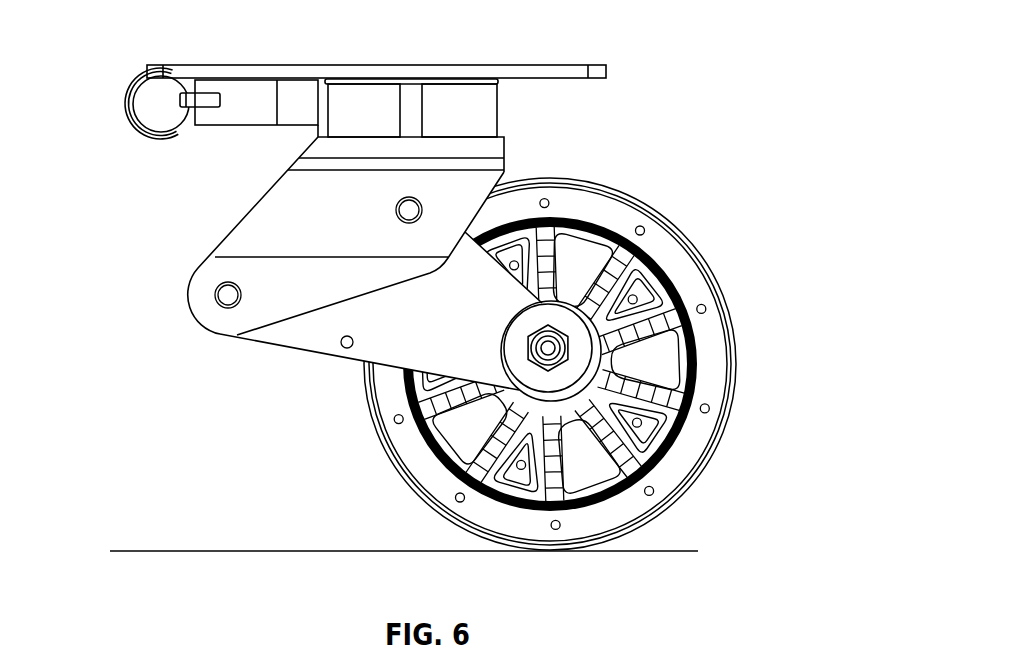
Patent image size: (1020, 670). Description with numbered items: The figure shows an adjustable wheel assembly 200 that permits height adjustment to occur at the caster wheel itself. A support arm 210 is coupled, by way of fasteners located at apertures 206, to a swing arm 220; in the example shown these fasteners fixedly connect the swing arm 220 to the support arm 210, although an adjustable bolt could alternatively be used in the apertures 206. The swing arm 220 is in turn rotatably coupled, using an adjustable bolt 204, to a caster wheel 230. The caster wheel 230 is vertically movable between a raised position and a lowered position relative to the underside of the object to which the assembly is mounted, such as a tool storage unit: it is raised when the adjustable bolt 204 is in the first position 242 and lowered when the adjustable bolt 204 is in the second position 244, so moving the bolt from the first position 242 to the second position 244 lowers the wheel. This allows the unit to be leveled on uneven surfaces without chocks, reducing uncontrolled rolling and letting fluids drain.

The adjustable wheel assembly 200 is at (663, 46).
The adjustable bolt 204 is at (548, 348).
The apertures 206 is at (228, 295).
The support arm 210 is at (328, 242).
The swing arm 220 is at (403, 336).
The caster wheel 230 is at (648, 212).
The first position 242 is at (550, 406).
The second position 244 is at (550, 322).